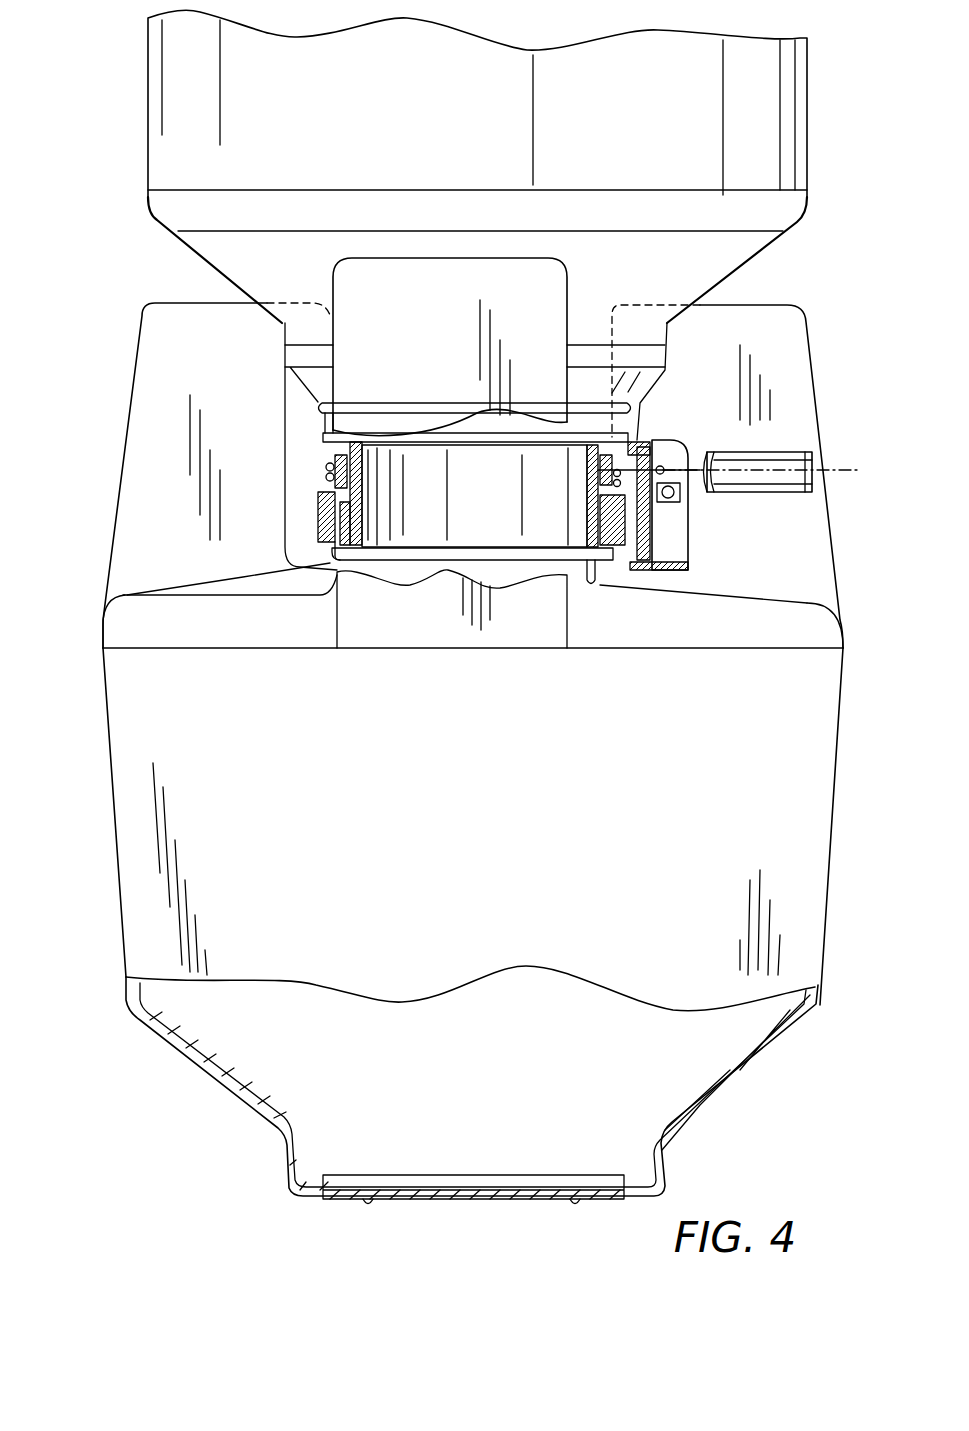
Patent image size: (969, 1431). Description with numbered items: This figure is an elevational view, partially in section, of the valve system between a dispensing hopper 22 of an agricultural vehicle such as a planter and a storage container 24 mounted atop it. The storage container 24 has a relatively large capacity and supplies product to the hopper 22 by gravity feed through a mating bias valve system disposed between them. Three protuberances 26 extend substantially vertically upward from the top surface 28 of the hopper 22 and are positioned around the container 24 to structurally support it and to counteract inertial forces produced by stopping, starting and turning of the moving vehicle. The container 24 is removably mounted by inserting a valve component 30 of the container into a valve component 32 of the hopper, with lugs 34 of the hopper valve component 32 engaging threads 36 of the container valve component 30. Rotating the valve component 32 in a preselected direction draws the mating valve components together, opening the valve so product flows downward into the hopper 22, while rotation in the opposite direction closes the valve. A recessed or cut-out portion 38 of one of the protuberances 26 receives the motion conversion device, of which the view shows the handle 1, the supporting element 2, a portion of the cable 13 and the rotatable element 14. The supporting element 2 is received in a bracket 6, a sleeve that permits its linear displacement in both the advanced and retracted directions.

The handle 1 is at (797, 453).
The supporting element 2 is at (652, 441).
The bracket 6 is at (650, 548).
The cable 13 is at (328, 467).
The rotatable element 14 is at (332, 442).
The dispensing hopper 22 is at (193, 803).
The storage container 24 is at (187, 146).
The protuberances 26 is at (150, 366).
The top surface 28 is at (243, 576).
The valve component 30 is at (627, 420).
The valve component 32 is at (627, 590).
The lugs 34 is at (318, 490).
The threads 36 is at (322, 516).
The recessed portion 38 is at (682, 531).